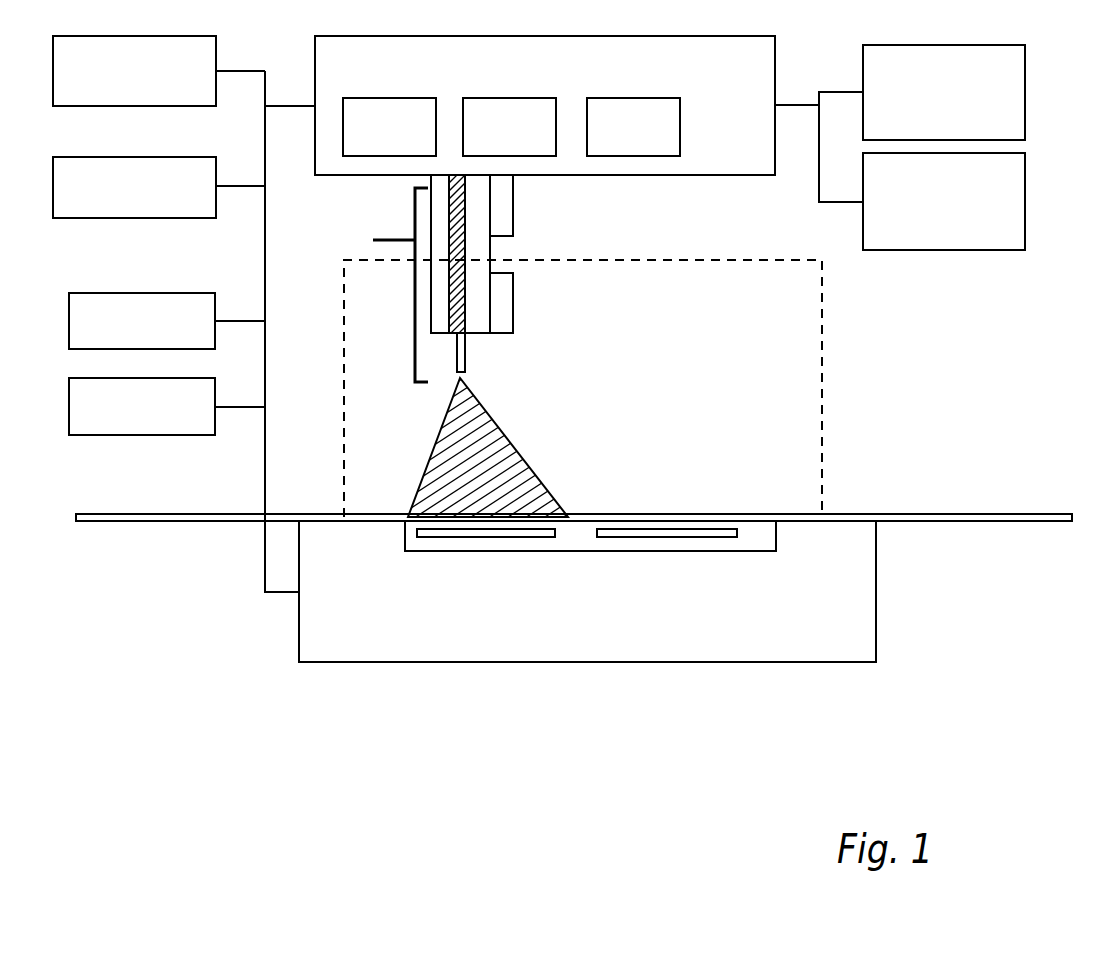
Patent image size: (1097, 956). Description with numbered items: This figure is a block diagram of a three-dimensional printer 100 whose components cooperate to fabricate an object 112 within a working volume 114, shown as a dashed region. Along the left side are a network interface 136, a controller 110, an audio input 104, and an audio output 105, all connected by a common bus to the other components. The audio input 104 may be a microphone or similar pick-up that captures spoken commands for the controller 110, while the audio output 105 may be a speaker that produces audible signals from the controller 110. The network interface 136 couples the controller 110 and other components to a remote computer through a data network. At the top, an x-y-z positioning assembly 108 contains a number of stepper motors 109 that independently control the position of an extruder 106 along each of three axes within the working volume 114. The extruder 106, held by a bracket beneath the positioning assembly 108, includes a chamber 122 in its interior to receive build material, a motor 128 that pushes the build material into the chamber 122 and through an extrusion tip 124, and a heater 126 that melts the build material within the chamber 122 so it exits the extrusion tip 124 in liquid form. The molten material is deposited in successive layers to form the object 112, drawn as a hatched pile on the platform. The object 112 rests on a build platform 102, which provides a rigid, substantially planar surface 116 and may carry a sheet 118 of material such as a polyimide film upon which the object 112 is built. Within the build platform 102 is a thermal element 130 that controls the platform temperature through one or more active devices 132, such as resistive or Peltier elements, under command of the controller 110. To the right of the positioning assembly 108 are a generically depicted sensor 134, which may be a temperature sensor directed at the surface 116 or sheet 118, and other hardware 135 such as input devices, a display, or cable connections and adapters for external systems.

The printer 100 is at (1009, 361).
The build platform 102 is at (854, 644).
The audio input 104 is at (160, 333).
The audio output 105 is at (160, 418).
The extruder 106 is at (379, 285).
The x-y-z positioning assembly 108 is at (393, 82).
The stepper motors 109 is at (407, 138).
The controller 110 is at (153, 198).
The object 112 is at (510, 432).
The working volume 114 is at (822, 383).
The surface 116 is at (382, 528).
The sheet 118 is at (912, 513).
The chamber 122 is at (440, 287).
The extrusion tip 124 is at (457, 353).
The heater 126 is at (513, 300).
The motor 128 is at (513, 207).
The thermal element 130 is at (547, 551).
The active devices 132 is at (685, 540).
The sensor 134 is at (934, 111).
The other hardware 135 is at (934, 209).
The network interface 136 is at (153, 83).